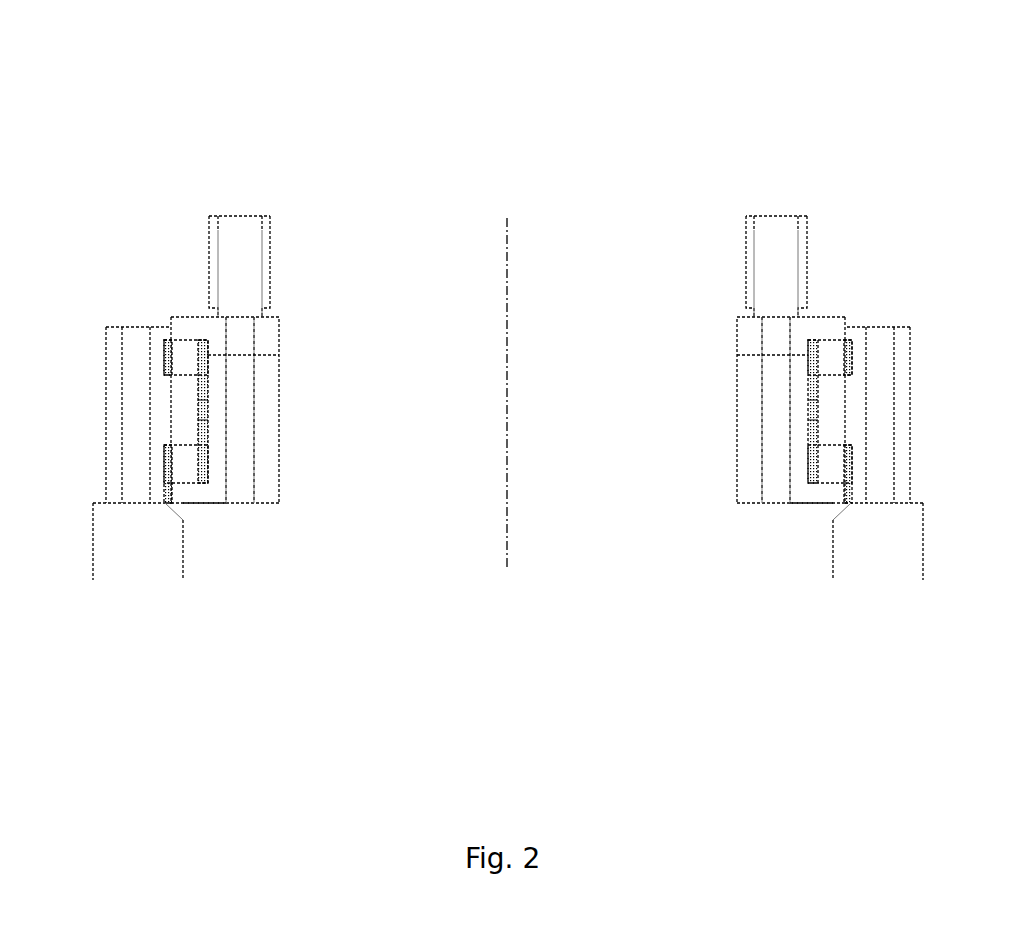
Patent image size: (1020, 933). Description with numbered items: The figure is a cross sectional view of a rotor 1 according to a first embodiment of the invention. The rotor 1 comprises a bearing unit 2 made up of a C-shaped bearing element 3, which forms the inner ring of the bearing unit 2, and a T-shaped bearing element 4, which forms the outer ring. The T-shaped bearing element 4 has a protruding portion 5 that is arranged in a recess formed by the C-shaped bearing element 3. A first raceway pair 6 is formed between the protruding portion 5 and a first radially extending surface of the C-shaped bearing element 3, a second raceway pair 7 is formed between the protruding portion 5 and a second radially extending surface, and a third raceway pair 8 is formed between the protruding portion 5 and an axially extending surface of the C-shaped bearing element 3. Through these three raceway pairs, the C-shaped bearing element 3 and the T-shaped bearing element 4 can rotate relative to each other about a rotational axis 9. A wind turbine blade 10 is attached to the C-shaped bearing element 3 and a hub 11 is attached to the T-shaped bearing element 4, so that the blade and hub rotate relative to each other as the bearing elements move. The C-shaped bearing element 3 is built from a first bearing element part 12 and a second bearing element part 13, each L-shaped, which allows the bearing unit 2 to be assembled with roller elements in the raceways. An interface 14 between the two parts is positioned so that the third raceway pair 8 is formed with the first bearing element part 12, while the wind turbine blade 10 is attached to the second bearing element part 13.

The rotor 1 is at (725, 80).
The bearing unit 2 is at (258, 545).
The C-shaped bearing element 3 is at (278, 413).
The T-shaped bearing element 4 is at (120, 445).
The protruding portion 5 is at (180, 410).
The first raceway pair 6 is at (190, 357).
The second raceway pair 7 is at (193, 470).
The third raceway pair 8 is at (205, 405).
The rotational axis 9 is at (508, 352).
The wind turbine blade 10 is at (240, 245).
The hub 11 is at (127, 567).
The first bearing element part 12 is at (265, 487).
The second bearing element part 13 is at (265, 335).
The interface 14 is at (265, 355).